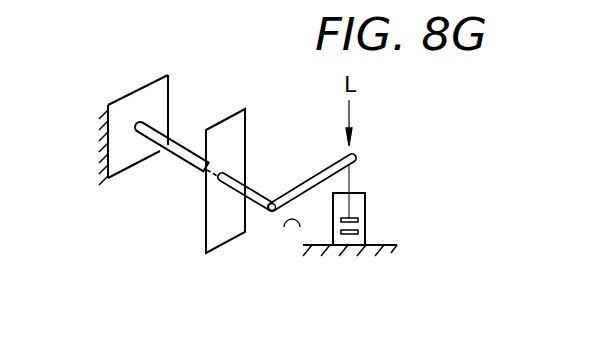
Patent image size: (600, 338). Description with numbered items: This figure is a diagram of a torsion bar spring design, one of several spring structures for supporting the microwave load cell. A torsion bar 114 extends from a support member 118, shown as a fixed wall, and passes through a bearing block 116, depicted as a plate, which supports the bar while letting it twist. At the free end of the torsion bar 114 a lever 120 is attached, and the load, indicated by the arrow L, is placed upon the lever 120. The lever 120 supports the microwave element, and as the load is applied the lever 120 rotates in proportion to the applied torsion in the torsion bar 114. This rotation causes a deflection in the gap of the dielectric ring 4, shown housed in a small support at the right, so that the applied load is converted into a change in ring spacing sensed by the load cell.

The support member 118 is at (107, 105).
The torsion bar 114 is at (178, 138).
The bearing block 116 is at (233, 238).
The lever 120 is at (356, 158).
The dielectric ring 4 is at (365, 222).